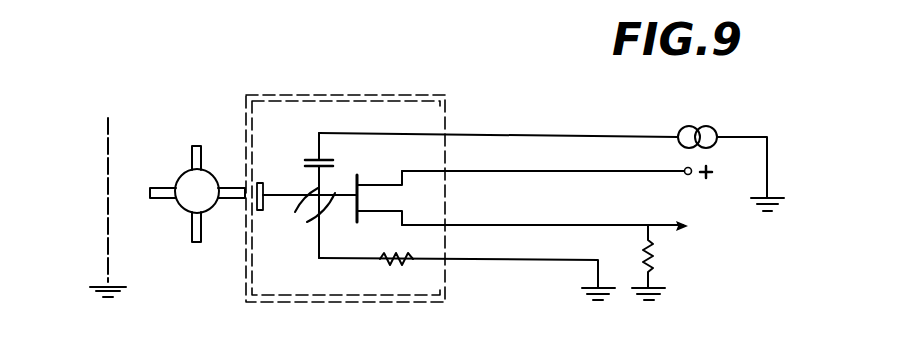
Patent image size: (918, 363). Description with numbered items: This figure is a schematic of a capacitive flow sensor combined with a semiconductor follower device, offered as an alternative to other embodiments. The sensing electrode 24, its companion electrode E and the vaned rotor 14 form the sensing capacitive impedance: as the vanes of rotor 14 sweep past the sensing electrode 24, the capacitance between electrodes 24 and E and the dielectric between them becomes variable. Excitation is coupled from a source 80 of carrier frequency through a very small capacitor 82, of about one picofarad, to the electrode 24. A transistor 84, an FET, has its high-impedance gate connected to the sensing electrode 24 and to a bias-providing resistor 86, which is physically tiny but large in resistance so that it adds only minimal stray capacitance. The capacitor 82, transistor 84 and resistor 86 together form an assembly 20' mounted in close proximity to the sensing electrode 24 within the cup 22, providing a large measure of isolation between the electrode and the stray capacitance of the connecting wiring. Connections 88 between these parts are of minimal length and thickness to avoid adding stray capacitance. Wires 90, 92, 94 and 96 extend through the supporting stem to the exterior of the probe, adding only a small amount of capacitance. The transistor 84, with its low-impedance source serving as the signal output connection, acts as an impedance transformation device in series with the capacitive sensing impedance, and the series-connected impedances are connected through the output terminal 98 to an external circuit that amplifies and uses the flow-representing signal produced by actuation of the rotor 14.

The companion electrode E is at (108, 160).
The vaned rotor 14 is at (171, 167).
The sensing electrode 24 is at (258, 215).
The cup 22 is at (362, 70).
The capacitor 82 is at (306, 160).
The assembly 20' is at (423, 159).
The transistor 84 is at (377, 197).
The connections 88 is at (335, 258).
The bias-providing resistor 86 is at (385, 263).
The wire 90 is at (578, 112).
The source of carrier frequency 80 is at (720, 100).
The wire 92 is at (528, 173).
The wire 94 is at (573, 225).
The output terminal 98 is at (684, 228).
The wire 96 is at (508, 260).